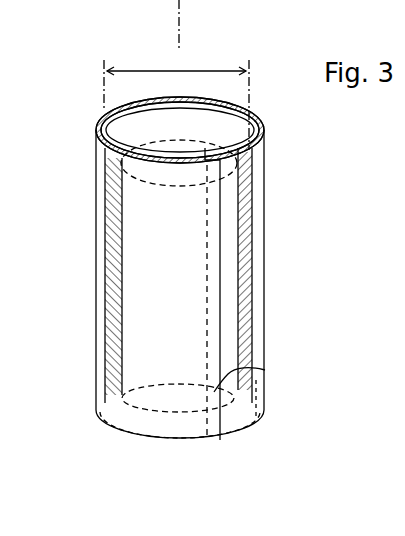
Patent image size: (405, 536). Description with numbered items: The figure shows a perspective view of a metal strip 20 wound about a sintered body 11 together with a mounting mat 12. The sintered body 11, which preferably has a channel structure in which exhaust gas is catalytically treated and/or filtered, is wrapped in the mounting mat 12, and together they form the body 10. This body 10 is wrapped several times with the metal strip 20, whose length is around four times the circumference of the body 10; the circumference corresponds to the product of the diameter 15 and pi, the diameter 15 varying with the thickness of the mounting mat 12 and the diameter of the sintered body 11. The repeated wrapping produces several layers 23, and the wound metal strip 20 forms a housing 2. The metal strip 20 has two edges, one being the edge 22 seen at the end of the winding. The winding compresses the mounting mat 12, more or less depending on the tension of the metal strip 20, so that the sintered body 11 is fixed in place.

The housing 2 is at (87, 336).
The body 10 is at (90, 438).
The sintered body 11 is at (167, 187).
The mounting mat 12 is at (248, 272).
The diameter 15 is at (198, 70).
The metal strip 20 is at (263, 188).
The edge 22 is at (265, 370).
The layers 23 is at (104, 110).